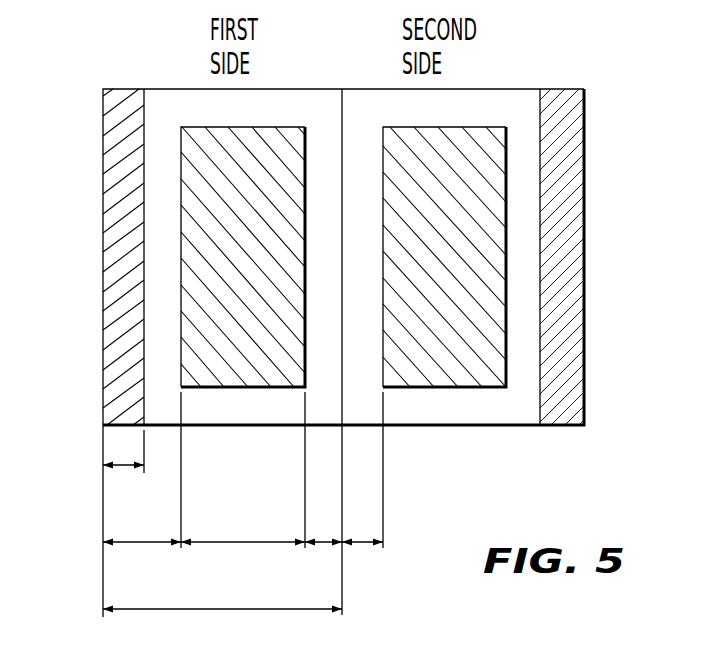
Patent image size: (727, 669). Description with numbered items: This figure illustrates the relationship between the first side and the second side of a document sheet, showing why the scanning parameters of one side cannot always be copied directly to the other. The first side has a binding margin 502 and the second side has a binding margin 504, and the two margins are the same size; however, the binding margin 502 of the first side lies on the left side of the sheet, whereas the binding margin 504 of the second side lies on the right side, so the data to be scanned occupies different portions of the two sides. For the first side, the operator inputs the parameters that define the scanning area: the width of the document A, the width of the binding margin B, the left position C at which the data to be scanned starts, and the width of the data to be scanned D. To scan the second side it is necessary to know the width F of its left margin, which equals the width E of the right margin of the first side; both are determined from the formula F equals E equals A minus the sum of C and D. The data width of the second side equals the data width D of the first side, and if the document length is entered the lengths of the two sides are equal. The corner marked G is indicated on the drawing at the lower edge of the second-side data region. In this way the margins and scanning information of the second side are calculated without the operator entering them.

The binding margin 502 is at (112, 203).
The binding margin 504 is at (575, 216).
The width of the document A is at (222, 627).
The width of the binding margin B is at (123, 485).
The left position of the first side C is at (142, 560).
The width of the data to be scanned D is at (243, 560).
The width of the right margin of the first side E is at (323, 560).
The width of the left margin of the second side F is at (362, 560).
The inner corner at second side block G is at (392, 435).